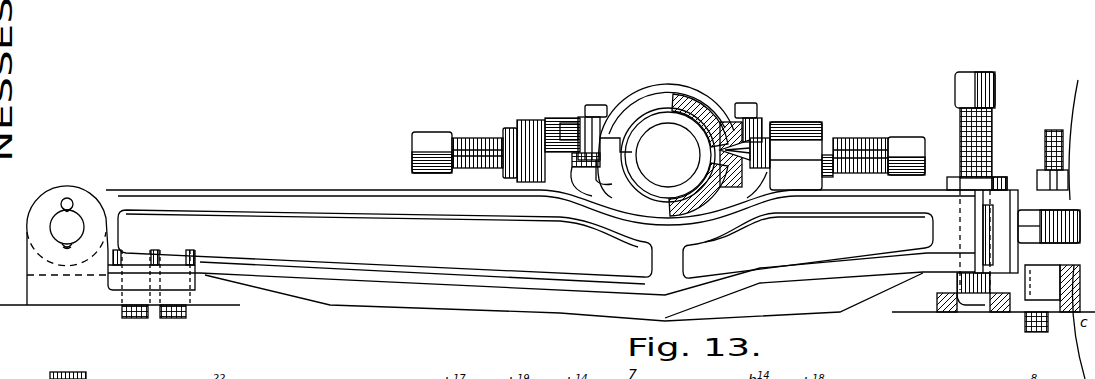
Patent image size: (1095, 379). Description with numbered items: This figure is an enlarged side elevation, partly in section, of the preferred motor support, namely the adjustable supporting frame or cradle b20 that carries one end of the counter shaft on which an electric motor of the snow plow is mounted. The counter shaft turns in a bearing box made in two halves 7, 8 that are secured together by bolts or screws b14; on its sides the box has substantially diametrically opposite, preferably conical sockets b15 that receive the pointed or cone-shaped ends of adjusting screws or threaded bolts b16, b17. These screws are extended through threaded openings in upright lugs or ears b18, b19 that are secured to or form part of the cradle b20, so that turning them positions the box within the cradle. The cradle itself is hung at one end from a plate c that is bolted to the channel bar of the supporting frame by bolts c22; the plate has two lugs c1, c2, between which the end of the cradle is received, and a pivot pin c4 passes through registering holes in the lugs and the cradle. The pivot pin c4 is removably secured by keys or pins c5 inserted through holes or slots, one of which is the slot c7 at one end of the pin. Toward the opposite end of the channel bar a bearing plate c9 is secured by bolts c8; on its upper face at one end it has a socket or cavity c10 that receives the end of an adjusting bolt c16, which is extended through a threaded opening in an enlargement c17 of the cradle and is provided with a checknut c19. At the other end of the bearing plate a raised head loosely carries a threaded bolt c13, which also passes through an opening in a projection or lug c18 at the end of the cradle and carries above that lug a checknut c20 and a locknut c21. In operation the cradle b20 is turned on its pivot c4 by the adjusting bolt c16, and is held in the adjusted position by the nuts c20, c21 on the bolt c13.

The box half 7 is at (633, 96).
The box half 8 is at (640, 200).
The bolts or screws b14 is at (586, 110).
The sockets b15 is at (750, 173).
The adjusting screw b16 is at (860, 140).
The adjusting screw b17 is at (462, 140).
The upright lug b18 is at (786, 125).
The upright lug b19 is at (521, 124).
The supporting frame or cradle b20 is at (436, 314).
The plate c is at (196, 297).
The lug c1 is at (88, 205).
The lug c2 is at (100, 378).
The pivot pin c4 is at (55, 225).
The keys or pins c5 is at (71, 197).
The hole or slot c7 is at (63, 373).
The bolts c8 is at (1040, 332).
The bearing plate c9 is at (1005, 311).
The socket or cavity c10 is at (947, 300).
The bolt c13 is at (1050, 130).
The adjusting bolt c16 is at (993, 118).
The enlargement c17 is at (975, 233).
The projection or lug c18 is at (1049, 261).
The checknut c19 is at (997, 177).
The checknut c20 is at (1072, 220).
The locknut c21 is at (1053, 130).
The bolts c22 is at (170, 318).